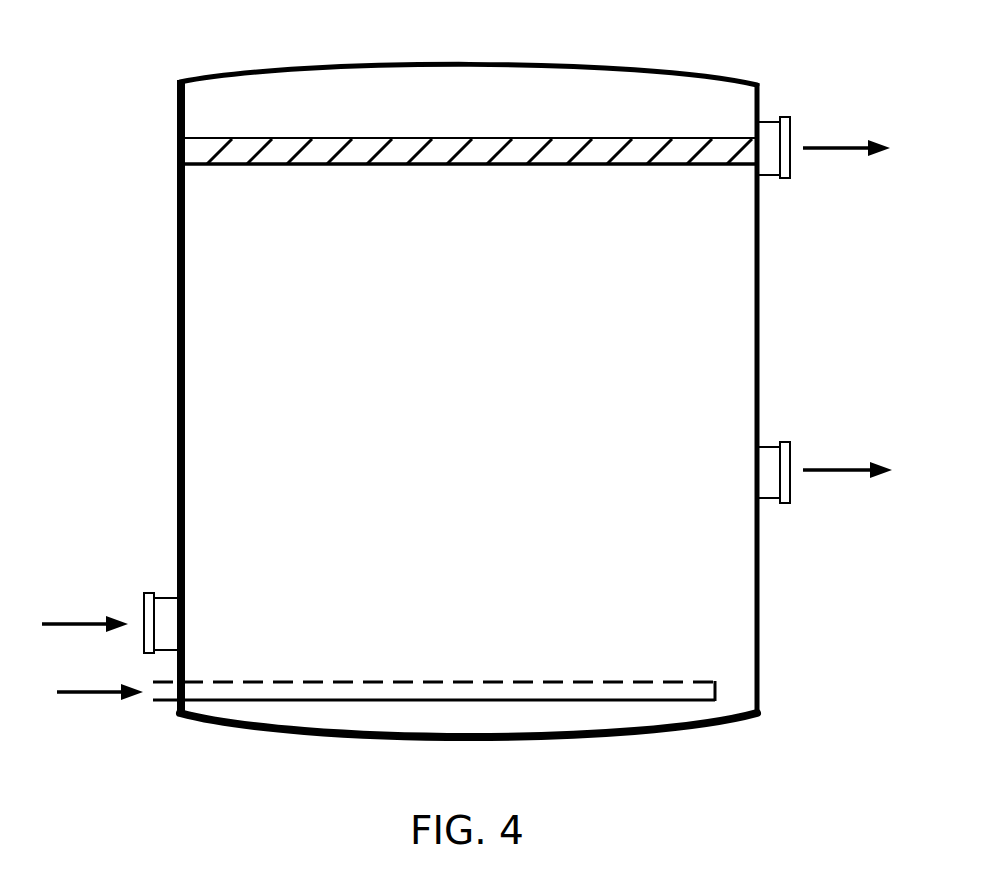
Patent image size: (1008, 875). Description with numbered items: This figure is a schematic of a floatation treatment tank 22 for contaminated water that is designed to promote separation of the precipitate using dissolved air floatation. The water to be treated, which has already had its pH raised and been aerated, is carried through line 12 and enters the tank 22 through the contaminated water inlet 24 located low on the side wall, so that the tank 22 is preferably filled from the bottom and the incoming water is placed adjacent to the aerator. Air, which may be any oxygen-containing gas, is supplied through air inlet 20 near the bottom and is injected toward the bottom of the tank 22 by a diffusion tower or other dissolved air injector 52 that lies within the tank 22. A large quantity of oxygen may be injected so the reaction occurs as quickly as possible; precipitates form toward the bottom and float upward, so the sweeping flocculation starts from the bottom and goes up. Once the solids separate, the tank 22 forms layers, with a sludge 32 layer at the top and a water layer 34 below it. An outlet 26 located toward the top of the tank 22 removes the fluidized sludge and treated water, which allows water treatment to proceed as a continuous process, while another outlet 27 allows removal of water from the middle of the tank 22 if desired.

The line 12 is at (72, 623).
The air inlet 20 is at (162, 693).
The treatment tank 22 is at (177, 262).
The contaminated water inlet 24 is at (148, 592).
The outlet 26 is at (786, 178).
The outlet 27 is at (786, 503).
The sludge 32 is at (198, 149).
The water layer 34 is at (210, 362).
The dissolved air injector 52 is at (715, 683).